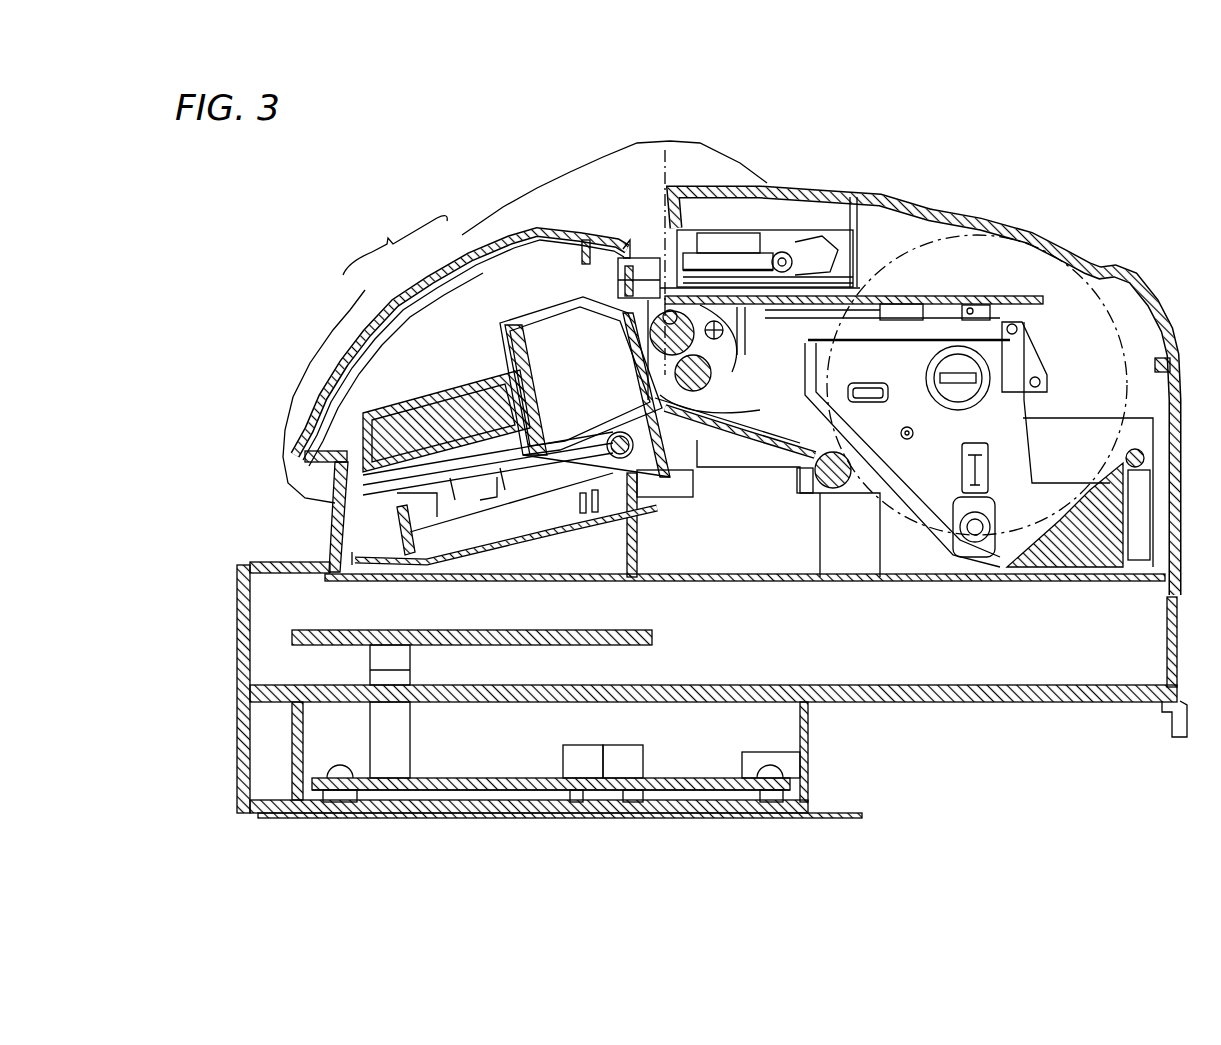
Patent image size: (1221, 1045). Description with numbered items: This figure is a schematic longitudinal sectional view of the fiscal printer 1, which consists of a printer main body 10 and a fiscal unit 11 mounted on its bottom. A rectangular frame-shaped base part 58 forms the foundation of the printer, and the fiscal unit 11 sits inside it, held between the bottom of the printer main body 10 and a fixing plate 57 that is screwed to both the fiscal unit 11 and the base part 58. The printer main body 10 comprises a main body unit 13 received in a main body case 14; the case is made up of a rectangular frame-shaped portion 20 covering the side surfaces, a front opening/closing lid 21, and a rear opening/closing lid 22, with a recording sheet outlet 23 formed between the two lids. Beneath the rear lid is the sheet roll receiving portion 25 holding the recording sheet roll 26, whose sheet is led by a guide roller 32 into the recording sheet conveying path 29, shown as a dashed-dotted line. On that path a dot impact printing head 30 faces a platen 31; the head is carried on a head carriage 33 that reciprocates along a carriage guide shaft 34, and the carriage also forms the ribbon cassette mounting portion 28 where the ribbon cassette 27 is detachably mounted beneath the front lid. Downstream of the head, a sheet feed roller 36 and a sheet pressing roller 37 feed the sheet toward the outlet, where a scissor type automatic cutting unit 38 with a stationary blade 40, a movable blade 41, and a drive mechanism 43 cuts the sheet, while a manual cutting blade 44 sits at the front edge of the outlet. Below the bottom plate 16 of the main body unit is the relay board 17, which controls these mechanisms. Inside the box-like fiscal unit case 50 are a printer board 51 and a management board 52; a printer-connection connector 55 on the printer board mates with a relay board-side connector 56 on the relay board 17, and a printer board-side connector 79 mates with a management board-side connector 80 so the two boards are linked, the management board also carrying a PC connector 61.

The fiscal printer 1 is at (767, 146).
The printer main body 10 is at (258, 551).
The fiscal unit 11 is at (820, 741).
The main body unit 13 is at (884, 250).
The main body case 14 is at (395, 240).
The bottom plate 16 is at (738, 582).
The relay board 17 is at (627, 644).
The rectangular frame-shaped portion 20 is at (332, 380).
The front opening/closing lid 21 is at (420, 290).
The rear opening/closing lid 22 is at (468, 231).
The recording sheet outlet 23 is at (650, 211).
The sheet roll receiving portion 25 is at (1008, 560).
The recording sheet roll 26 is at (1064, 284).
The ribbon cassette 27 is at (448, 403).
The ribbon cassette mounting portion 28 is at (410, 430).
The recording sheet conveying path 29 is at (740, 447).
The printing head 30 is at (580, 480).
The platen 31 is at (735, 365).
The guide roller 32 is at (827, 480).
The head carriage 33 is at (517, 490).
The carriage guide shaft 34 is at (655, 500).
The sheet feed roller 36 is at (777, 343).
The sheet pressing roller 37 is at (650, 318).
The automatic cutting unit 38 is at (800, 207).
The stationary blade 40 is at (600, 238).
The movable blade 41 is at (726, 262).
The drive mechanism 43 is at (782, 219).
The cutting blade 44 is at (655, 248).
The fiscal unit case 50 is at (290, 743).
The printer board 51 is at (447, 790).
The management board 52 is at (710, 792).
The printer-connection connector 55 is at (410, 748).
The relay board-side connector 56 is at (402, 660).
The fixing plate 57 is at (830, 820).
The base part 58 is at (237, 733).
The PC connector 61 is at (742, 767).
The printer board-side connector 79 is at (563, 760).
The management board-side connector 80 is at (643, 758).